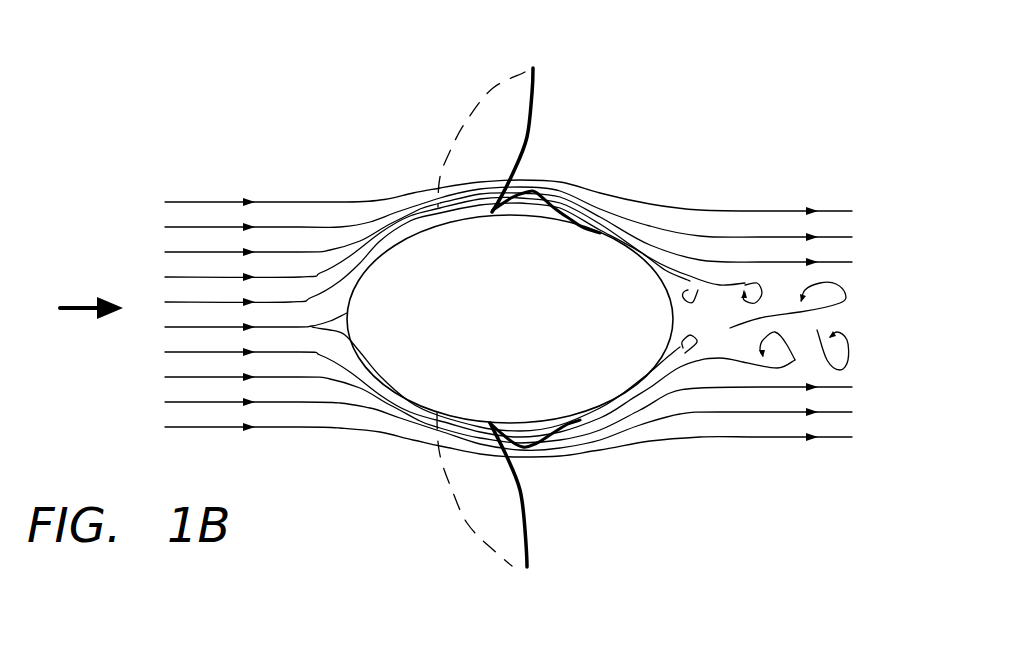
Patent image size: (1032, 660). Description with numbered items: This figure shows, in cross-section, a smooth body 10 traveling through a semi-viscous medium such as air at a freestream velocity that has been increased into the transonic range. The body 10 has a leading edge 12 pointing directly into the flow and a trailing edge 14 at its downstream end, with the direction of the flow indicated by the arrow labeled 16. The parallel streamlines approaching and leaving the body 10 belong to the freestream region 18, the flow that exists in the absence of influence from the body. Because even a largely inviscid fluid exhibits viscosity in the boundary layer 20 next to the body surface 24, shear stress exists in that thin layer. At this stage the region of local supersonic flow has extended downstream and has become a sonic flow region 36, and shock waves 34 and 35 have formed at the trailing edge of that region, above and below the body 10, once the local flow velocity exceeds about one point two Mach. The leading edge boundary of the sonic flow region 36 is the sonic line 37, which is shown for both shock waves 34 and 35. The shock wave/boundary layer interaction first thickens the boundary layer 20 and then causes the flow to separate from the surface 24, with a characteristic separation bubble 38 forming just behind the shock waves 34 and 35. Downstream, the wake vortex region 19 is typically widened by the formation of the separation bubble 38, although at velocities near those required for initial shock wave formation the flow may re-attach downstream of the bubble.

The smooth body 10 is at (613, 277).
The leading edge 12 is at (307, 327).
The trailing edge 14 is at (673, 322).
The flow direction arrow 16 is at (88, 302).
The freestream region 18 is at (275, 252).
The wake vortex region 19 is at (860, 310).
The boundary layer 20 is at (585, 200).
The body surface 24 is at (557, 417).
The shock wave 34 is at (533, 88).
The shock wave 35 is at (527, 515).
The sonic flow region 36 is at (466, 140).
The sonic line 37 is at (505, 80).
The separation bubble 38 is at (537, 183).